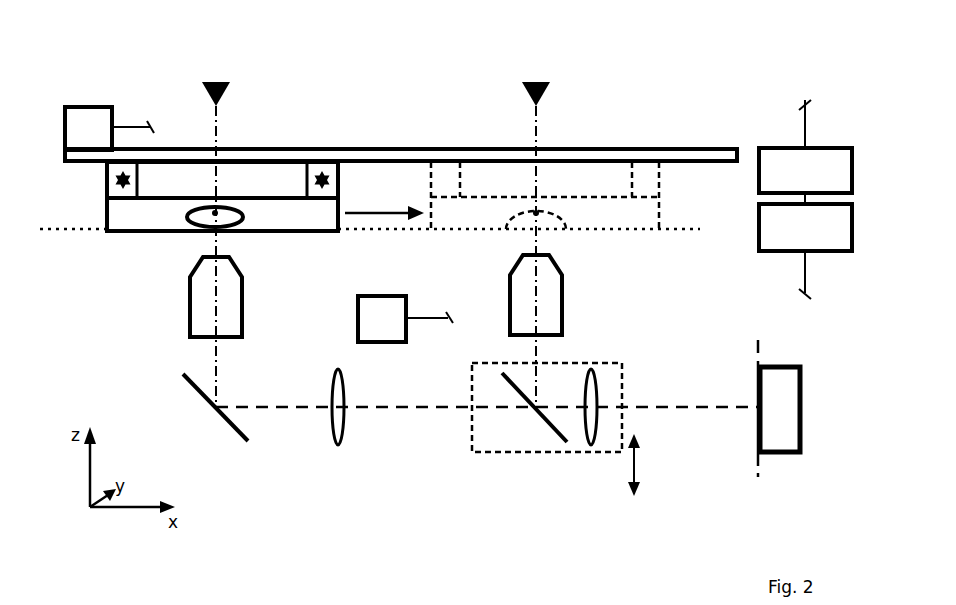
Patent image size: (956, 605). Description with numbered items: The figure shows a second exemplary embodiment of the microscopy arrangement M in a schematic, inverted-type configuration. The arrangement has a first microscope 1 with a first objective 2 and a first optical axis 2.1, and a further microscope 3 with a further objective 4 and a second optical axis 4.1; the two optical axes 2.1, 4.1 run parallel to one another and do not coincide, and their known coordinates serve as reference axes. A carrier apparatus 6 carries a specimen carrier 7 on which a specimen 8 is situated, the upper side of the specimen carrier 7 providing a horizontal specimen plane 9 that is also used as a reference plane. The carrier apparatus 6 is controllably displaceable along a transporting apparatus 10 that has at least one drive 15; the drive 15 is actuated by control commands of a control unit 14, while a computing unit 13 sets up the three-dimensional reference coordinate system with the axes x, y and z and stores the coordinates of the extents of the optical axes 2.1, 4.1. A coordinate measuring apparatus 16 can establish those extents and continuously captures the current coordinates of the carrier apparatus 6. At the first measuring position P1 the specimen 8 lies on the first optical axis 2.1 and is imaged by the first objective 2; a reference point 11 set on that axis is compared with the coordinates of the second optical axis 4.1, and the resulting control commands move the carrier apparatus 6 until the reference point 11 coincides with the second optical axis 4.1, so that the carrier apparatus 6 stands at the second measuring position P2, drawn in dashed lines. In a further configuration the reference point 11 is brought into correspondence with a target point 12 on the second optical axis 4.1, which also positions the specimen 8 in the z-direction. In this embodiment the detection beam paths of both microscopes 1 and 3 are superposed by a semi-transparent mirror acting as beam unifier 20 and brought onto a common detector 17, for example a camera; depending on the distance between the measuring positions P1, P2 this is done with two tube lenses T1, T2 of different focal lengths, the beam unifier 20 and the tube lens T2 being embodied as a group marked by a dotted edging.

The first microscope 1 is at (146, 330).
The first objective 2 is at (232, 283).
The first optical axis 2.1 is at (216, 371).
The further microscope 3 is at (670, 305).
The further objective 4 is at (556, 288).
The second optical axis 4.1 is at (538, 350).
The carrier apparatus 6 is at (107, 186).
The specimen carrier 7 is at (145, 228).
The specimen 8 is at (205, 232).
The specimen plane 9 is at (70, 232).
The transporting apparatus 10 is at (678, 150).
The reference point 11 is at (240, 213).
The target point 12 is at (538, 212).
The computing unit 13 is at (805, 246).
The control unit 14 is at (805, 146).
The drive 15 is at (109, 128).
The coordinate measuring apparatus 16 is at (405, 319).
The detector 17 is at (800, 427).
The beam unifier 20 is at (548, 427).
The microscopy arrangement M is at (176, 116).
The first measuring position P1 is at (216, 228).
The second measuring position P2 is at (536, 228).
The first tube lens T1 is at (340, 445).
The second tube lens T2 is at (594, 446).